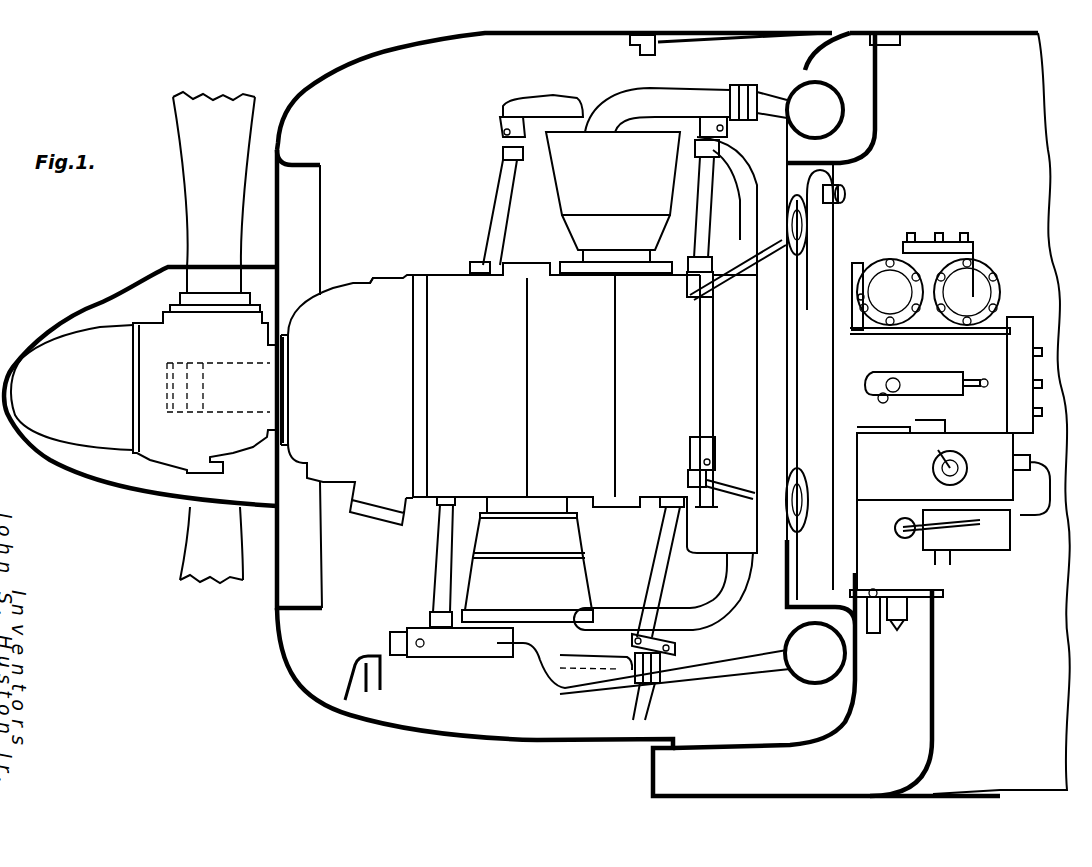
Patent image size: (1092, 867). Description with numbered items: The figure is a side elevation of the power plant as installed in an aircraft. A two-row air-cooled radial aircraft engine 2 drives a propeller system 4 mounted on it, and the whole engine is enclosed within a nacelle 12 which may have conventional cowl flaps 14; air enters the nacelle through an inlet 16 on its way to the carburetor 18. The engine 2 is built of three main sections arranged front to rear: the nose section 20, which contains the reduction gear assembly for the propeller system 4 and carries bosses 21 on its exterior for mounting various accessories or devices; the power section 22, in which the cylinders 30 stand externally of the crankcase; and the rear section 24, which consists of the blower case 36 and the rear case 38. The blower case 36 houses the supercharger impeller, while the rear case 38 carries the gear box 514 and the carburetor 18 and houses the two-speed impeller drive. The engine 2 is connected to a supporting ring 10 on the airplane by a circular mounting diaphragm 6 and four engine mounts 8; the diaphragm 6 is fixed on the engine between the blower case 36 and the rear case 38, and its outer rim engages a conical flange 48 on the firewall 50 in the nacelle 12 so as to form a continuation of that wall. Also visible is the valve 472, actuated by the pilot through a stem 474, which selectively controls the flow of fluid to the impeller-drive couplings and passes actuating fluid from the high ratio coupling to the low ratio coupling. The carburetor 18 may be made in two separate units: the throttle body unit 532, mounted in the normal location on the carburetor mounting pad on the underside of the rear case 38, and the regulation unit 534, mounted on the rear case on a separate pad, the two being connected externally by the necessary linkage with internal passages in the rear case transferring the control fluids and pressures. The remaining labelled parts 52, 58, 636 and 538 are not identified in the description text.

The engine 2 is at (433, 507).
The propeller system 4 is at (150, 463).
The mounting diaphragm 6 is at (766, 177).
The engine mounts 8 is at (738, 272).
The supporting ring 10 is at (823, 213).
The nacelle 12 is at (472, 36).
The cowl flaps 14 is at (707, 37).
The inlet 16 is at (698, 780).
The carburetor 18 is at (954, 586).
The nose section 20 is at (357, 370).
The bosses 21 is at (375, 282).
The power section 22 is at (510, 372).
The rear section 24 is at (797, 363).
The cylinders 30 is at (570, 188).
The blower case 36 is at (723, 365).
The rear case 38 is at (993, 343).
The conical flange 48 is at (833, 163).
The firewall 50 is at (878, 90).
The resilient mount 52 is at (793, 247).
The mounting bracket 58 is at (692, 298).
The valve 472 is at (905, 377).
The stem 474 is at (980, 368).
The gear box 514 is at (967, 252).
The throttle body unit 532 is at (910, 558).
The regulation unit 534 is at (953, 467).
The filter 636 is at (910, 627).
The drain fitting 538 is at (873, 635).